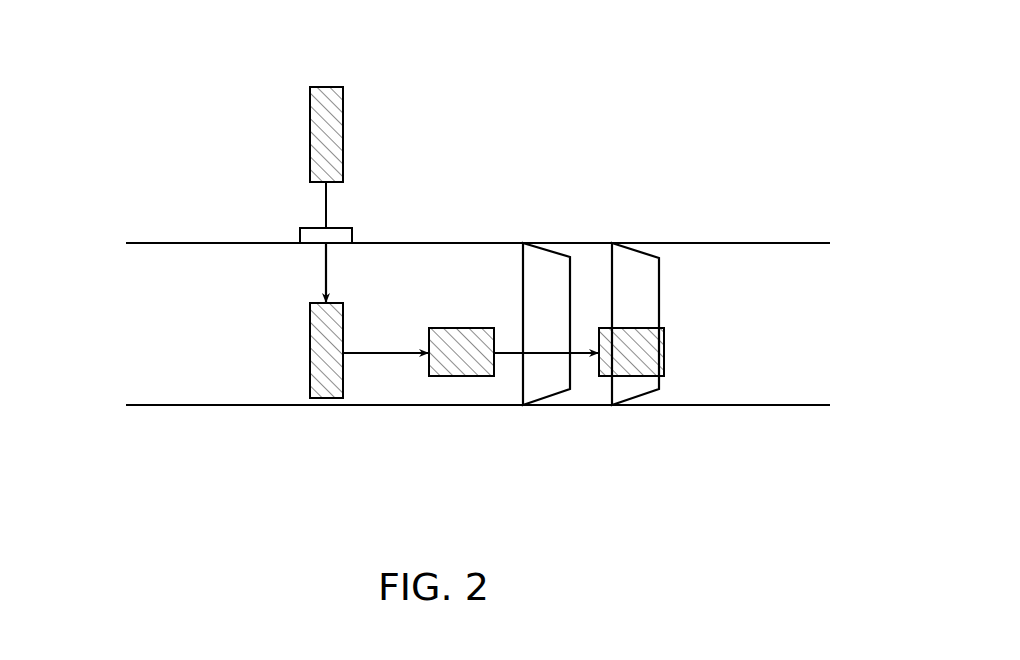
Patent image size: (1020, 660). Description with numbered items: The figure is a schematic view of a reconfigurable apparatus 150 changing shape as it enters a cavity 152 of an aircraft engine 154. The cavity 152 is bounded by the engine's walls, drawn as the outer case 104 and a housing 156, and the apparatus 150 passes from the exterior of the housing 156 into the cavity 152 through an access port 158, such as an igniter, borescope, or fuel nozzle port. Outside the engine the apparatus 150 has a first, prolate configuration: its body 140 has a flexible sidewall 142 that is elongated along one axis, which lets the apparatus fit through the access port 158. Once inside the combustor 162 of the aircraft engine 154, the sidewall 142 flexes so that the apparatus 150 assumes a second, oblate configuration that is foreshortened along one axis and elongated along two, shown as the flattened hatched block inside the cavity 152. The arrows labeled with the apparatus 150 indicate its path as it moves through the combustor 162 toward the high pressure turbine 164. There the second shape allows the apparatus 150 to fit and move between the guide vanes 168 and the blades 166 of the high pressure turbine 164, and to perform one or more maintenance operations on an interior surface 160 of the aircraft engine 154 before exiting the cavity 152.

The outer case 104 is at (152, 408).
The body 140 is at (355, 85).
The sidewall 142 is at (345, 135).
The reconfigurable apparatus 150 is at (300, 137).
The cavity 152 is at (207, 353).
The aircraft engine 154 is at (180, 182).
The housing 156 is at (147, 243).
The access port 158 is at (300, 232).
The interior surface 160 is at (637, 270).
The combustor 162 is at (330, 430).
The high pressure turbine 164 is at (618, 437).
The blades 166 is at (635, 383).
The guide vanes 168 is at (552, 265).